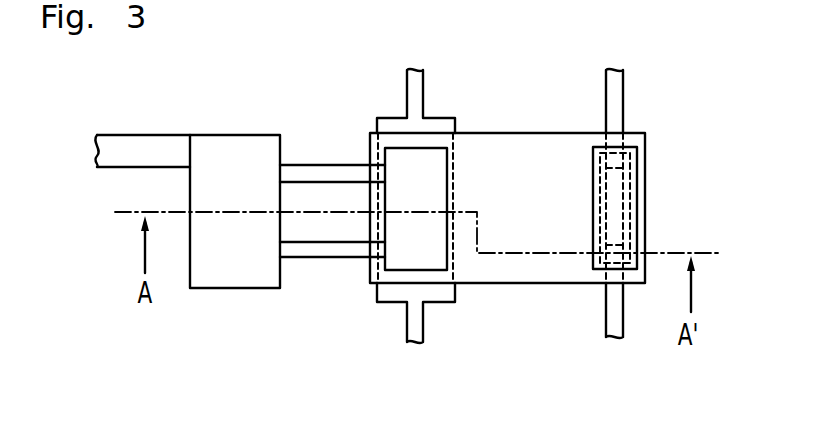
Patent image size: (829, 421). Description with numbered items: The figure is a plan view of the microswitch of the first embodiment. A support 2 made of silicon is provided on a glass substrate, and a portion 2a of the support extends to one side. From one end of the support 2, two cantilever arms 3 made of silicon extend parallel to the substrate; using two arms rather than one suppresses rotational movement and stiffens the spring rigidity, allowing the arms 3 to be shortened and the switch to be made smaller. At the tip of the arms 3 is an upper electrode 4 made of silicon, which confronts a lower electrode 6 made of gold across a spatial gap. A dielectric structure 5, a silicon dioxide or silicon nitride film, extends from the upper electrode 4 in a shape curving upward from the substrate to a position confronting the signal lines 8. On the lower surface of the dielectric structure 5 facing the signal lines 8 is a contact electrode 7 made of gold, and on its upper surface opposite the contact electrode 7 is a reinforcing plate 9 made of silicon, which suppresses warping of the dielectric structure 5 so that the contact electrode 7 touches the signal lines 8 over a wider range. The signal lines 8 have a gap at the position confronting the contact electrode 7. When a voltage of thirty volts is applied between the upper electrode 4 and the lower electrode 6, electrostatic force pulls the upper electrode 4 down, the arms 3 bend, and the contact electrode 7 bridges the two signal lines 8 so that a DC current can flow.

The support 2 is at (233, 135).
The shaft portion 2a is at (146, 135).
The cantilever arm 3 is at (325, 164).
The upper electrode 4 is at (437, 183).
The dielectric structure 5 is at (539, 133).
The lower electrode 6 is at (433, 117).
The contact electrode 7 is at (630, 178).
The signal line 8 is at (623, 101).
The reinforcing plate 9 is at (637, 221).